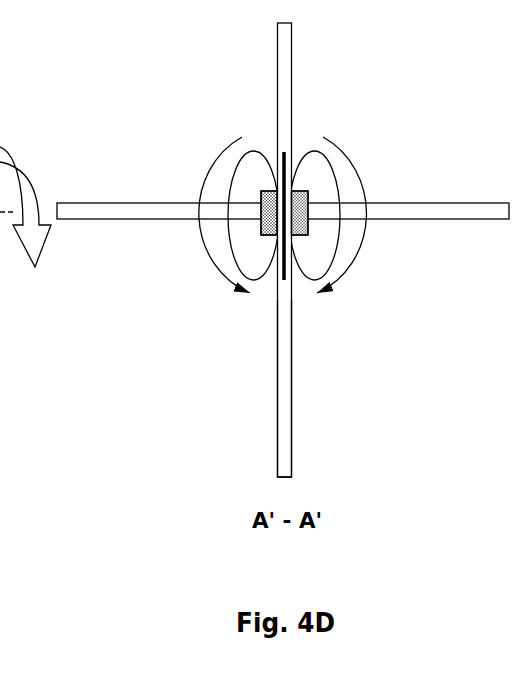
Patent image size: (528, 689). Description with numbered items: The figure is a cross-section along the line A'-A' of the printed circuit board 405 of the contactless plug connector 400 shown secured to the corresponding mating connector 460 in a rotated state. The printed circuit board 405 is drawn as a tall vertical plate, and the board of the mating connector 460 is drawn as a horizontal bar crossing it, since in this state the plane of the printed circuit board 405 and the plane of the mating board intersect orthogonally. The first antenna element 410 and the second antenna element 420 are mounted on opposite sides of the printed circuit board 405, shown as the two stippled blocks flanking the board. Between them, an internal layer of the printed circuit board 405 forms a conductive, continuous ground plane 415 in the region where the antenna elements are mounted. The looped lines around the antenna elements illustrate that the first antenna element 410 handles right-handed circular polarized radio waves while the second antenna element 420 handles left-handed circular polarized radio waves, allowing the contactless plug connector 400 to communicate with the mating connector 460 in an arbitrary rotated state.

The contactless plug connector 400 is at (292, 43).
The printed circuit board 405 is at (285, 413).
The first antenna element 410 is at (263, 213).
The ground plane 415 is at (286, 279).
The second antenna element 420 is at (308, 216).
The mating connector 460 is at (456, 203).